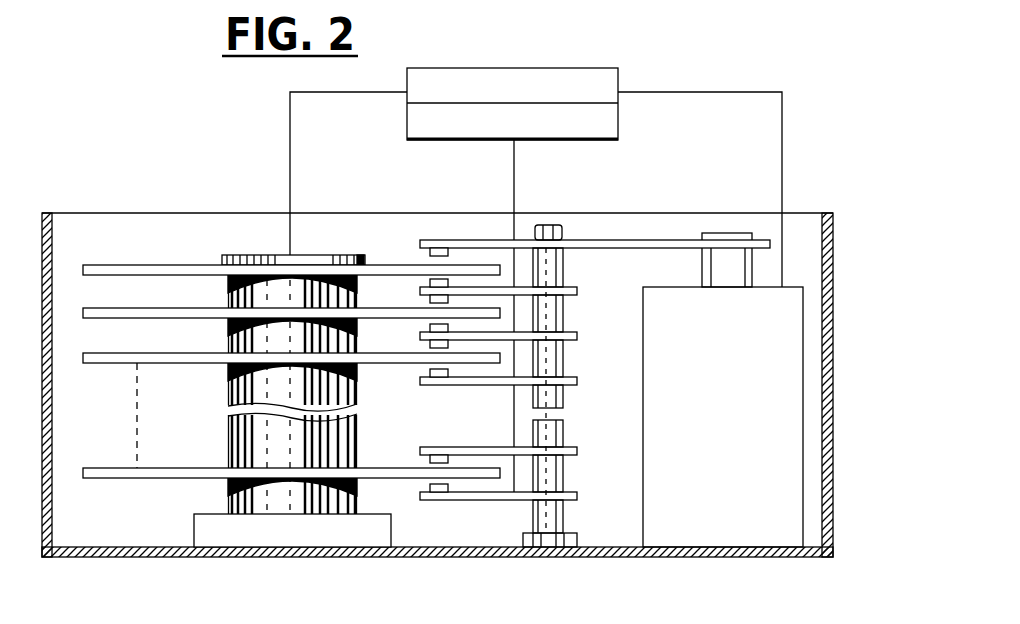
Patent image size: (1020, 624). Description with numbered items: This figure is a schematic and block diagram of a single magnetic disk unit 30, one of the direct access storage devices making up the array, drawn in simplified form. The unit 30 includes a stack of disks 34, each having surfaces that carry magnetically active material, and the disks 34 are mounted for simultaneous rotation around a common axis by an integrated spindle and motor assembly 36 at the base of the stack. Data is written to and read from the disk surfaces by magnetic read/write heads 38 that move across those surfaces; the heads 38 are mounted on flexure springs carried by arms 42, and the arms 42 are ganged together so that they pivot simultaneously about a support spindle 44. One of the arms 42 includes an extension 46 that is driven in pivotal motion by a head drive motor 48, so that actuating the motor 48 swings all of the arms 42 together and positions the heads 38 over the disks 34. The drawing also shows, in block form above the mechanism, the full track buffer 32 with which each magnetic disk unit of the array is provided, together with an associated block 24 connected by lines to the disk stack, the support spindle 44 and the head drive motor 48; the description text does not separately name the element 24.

The magnetic disk unit 30 is at (104, 138).
The drive circuit 24 is at (618, 72).
The full track buffer 32 is at (618, 122).
The disks 34 is at (175, 308).
The integrated spindle and motor assembly 36 is at (383, 533).
The magnetic read/write heads 38 is at (430, 253).
The arms 42 is at (470, 240).
The support spindle 44 is at (565, 398).
The extension 46 is at (598, 240).
The head drive motor 48 is at (790, 448).